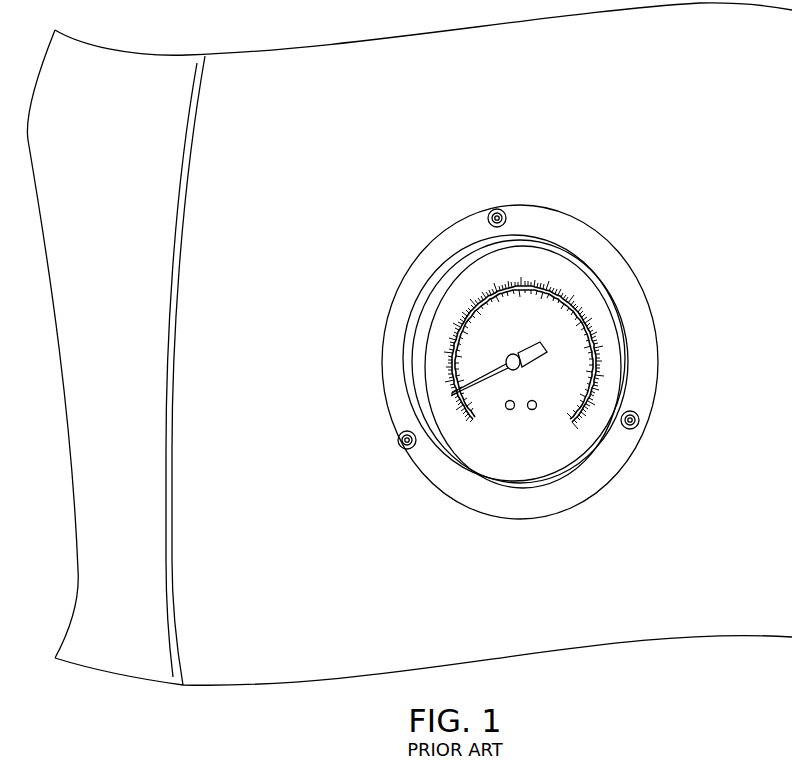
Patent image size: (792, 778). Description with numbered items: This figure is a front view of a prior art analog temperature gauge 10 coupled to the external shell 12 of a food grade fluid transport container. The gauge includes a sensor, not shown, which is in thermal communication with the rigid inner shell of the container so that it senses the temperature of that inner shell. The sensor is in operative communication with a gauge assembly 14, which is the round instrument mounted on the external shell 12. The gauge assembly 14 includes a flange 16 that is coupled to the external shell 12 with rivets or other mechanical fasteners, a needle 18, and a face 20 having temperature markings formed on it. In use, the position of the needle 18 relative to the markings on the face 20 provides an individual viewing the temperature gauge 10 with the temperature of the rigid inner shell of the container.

The analog temperature gauge 10 is at (658, 214).
The external shell 12 is at (280, 125).
The gauge assembly 14 is at (653, 307).
The flange 16 is at (428, 268).
The needle 18 is at (487, 374).
The face 20 is at (550, 385).